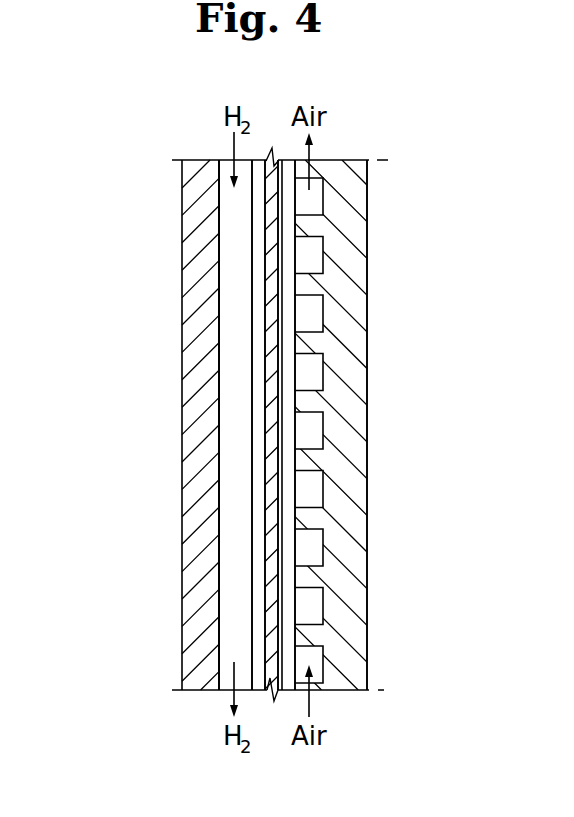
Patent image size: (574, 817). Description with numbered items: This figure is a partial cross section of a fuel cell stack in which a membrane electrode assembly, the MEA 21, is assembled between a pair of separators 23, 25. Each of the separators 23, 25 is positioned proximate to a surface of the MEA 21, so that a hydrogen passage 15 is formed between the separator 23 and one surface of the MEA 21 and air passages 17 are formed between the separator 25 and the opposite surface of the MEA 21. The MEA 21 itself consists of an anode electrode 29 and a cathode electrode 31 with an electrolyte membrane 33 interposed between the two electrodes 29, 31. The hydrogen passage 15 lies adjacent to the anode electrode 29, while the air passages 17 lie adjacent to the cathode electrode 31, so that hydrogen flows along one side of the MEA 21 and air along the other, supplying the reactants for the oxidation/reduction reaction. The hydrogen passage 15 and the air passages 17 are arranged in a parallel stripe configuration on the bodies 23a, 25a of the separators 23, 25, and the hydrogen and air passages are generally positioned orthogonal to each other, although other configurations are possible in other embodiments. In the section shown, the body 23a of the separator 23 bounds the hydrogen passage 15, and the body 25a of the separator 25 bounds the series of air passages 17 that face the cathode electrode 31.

The hydrogen passage 15 is at (235, 256).
The air passage 17 is at (312, 242).
The MEA 21 is at (187, 425).
The separator 23 is at (182, 608).
The body of separator 23a is at (186, 360).
The separator 25 is at (368, 493).
The body of separator 25a is at (368, 277).
The anode electrode 29 is at (257, 422).
The cathode electrode 31 is at (283, 478).
The electrolyte membrane 33 is at (270, 446).